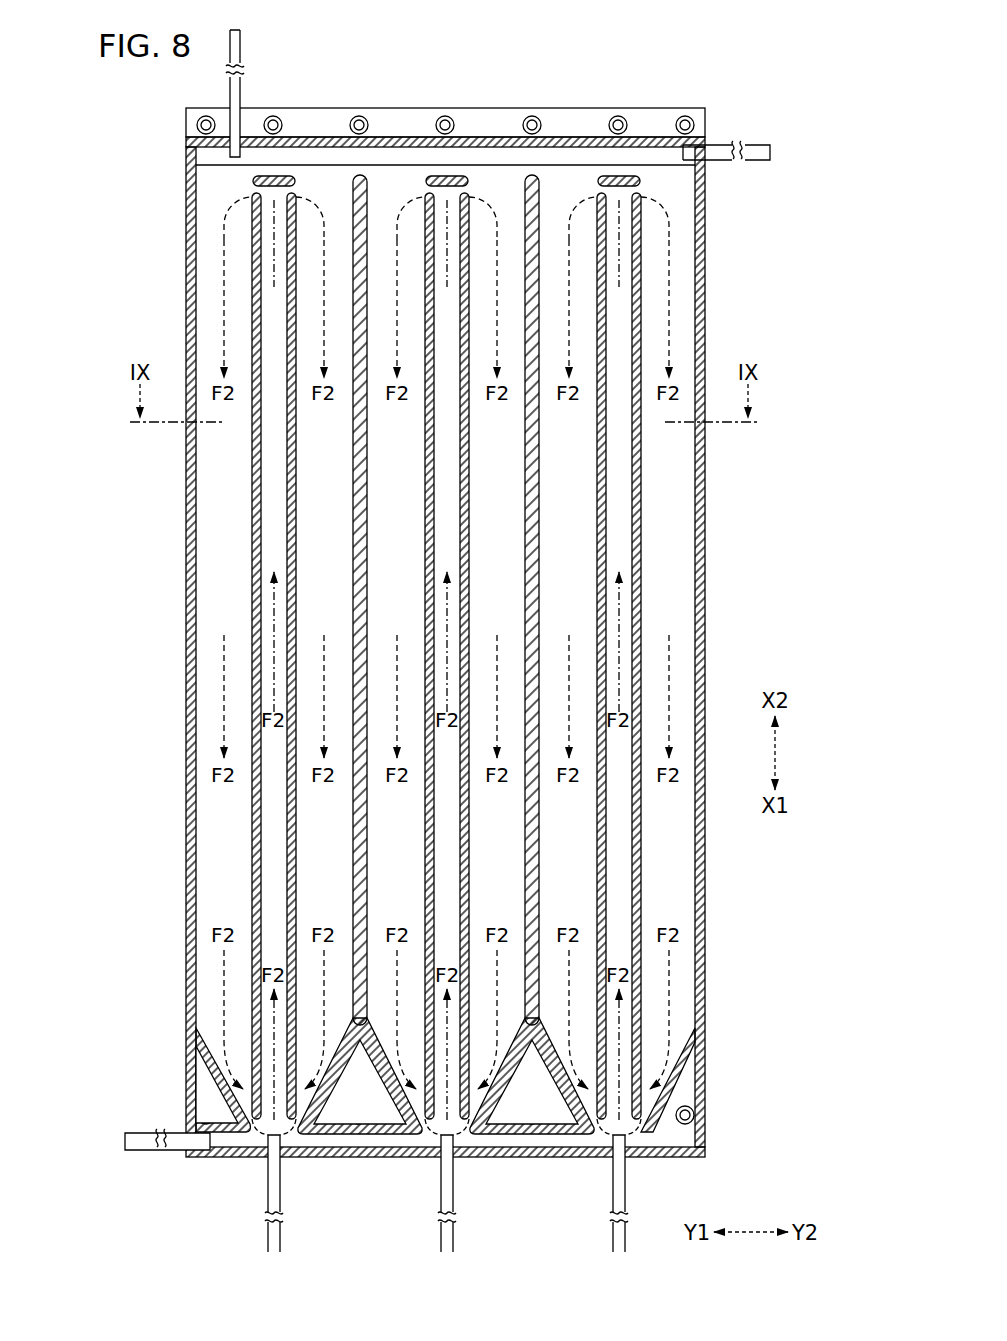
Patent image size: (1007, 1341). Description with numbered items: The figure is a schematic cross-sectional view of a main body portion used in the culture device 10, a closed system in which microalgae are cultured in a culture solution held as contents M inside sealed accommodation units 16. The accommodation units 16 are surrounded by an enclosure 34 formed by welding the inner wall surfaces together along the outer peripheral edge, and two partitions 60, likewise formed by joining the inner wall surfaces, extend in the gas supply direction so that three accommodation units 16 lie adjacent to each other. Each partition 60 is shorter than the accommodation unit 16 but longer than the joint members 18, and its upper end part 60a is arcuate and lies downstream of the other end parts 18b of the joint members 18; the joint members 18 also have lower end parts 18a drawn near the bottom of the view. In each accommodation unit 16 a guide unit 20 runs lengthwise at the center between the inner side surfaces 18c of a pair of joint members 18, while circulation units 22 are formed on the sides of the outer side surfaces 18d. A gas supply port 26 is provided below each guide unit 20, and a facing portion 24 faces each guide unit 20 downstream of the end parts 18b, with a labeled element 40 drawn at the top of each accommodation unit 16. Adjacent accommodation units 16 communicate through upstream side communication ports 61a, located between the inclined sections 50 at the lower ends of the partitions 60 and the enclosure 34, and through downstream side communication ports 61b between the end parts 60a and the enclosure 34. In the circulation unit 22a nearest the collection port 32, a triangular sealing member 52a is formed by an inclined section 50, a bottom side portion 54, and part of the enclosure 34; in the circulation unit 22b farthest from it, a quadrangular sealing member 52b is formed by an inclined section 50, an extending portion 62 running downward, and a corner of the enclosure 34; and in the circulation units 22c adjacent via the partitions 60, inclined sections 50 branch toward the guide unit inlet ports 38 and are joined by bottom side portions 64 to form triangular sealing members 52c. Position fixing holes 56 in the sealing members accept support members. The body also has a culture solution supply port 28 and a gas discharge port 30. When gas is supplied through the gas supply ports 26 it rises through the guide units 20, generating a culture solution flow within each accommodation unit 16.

The culture device 10 is at (172, 93).
The accommodation unit 16 is at (323, 162).
The joint member 18 is at (296, 597).
The tube lower end opening 18a is at (250, 1122).
The other end part of the joint member 18b is at (293, 190).
The inner side surface of the joint member 18c is at (287, 523).
The outer side surface of the joint member 18d is at (296, 503).
The guide unit 20 is at (263, 812).
The circulation unit 22 is at (453, 856).
The circulation unit 22a is at (218, 893).
The circulation unit 22b is at (668, 880).
The circulation unit 22c is at (562, 860).
The facing portion 24 is at (273, 176).
The gas supply port 26 is at (273, 1142).
The culture solution supply port 28 is at (704, 153).
The gas discharge port 30 is at (231, 144).
The collection port 32 is at (190, 1150).
The enclosure 34 is at (192, 447).
The guide unit inlet port 38 is at (255, 1130).
The communication hole 40 is at (255, 181).
The inclined section 50 is at (222, 1088).
The sealing member 52a is at (214, 1078).
The sealing member 52b is at (677, 1089).
The sealing member 52c is at (332, 1134).
The bottom side portion 54 is at (222, 1138).
The position fixing hole 56 is at (700, 1115).
The partition 60 is at (356, 445).
The end part of the partition 60a is at (362, 176).
The upstream side communication port 61a is at (380, 1138).
The downstream side communication port 61b is at (358, 160).
The extending portion 62 is at (645, 1140).
The bottom side portion 64 is at (347, 1133).
The contents M is at (218, 577).